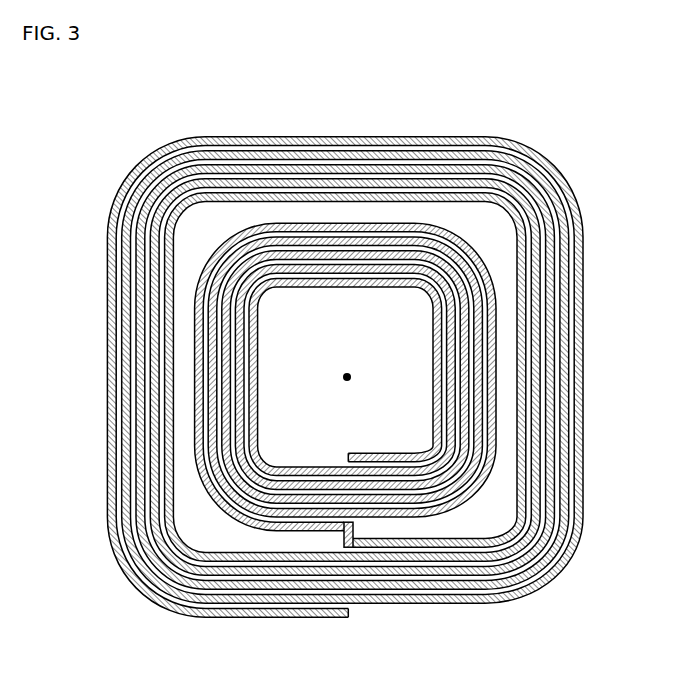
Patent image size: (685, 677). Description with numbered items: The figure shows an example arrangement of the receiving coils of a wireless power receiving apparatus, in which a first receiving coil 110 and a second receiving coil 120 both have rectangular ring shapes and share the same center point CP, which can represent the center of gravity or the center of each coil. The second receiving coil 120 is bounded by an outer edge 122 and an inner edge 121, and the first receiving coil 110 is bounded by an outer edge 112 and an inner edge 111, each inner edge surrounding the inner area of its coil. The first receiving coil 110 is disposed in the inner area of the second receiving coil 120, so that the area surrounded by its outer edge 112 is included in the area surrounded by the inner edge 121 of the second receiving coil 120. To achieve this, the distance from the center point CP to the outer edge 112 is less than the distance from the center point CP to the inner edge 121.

The first receiving coil 110 is at (263, 444).
The inner edge of the first receiving coil 111 is at (328, 468).
The outer edge of the first receiving coil 112 is at (272, 531).
The second receiving coil 120 is at (306, 346).
The inner edge of the second receiving coil 121 is at (346, 200).
The outer edge of the second receiving coil 122 is at (278, 137).
The center point CP is at (351, 377).